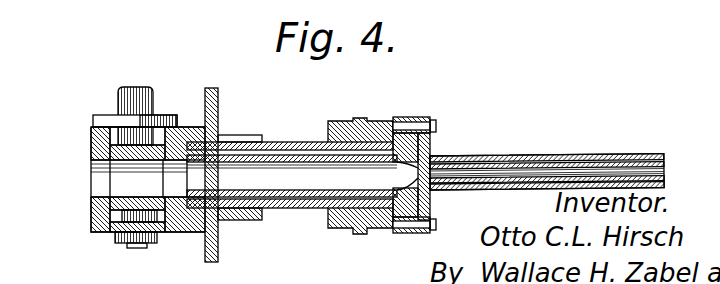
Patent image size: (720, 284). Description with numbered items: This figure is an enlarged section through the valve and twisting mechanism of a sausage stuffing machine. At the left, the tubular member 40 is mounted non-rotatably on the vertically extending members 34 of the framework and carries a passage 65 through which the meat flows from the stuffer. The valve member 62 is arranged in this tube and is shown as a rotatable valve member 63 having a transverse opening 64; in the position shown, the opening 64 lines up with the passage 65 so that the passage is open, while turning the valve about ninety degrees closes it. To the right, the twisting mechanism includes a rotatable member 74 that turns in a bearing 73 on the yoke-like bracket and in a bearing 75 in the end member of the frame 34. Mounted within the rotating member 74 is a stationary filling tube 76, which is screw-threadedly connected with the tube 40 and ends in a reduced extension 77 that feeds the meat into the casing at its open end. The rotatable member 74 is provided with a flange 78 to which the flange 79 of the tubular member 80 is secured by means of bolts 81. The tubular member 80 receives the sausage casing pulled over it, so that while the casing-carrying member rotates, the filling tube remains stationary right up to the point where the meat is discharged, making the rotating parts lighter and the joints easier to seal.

The vertically extending members 34 is at (220, 100).
The tubular member 40 is at (98, 233).
The valve member 62 is at (160, 118).
The rotatable valve member 63 is at (100, 150).
The transverse opening 64 is at (180, 218).
The passage 65 is at (100, 185).
The bearing 73 is at (342, 122).
The rotatable member 74 is at (297, 150).
The bearing 75 is at (222, 135).
The stationary filling tube 76 is at (285, 192).
The reduced extension 77 is at (535, 178).
The flange 78 is at (405, 117).
The flange 79 is at (432, 143).
The tubular member 80 is at (485, 156).
The bolts 81 is at (413, 125).